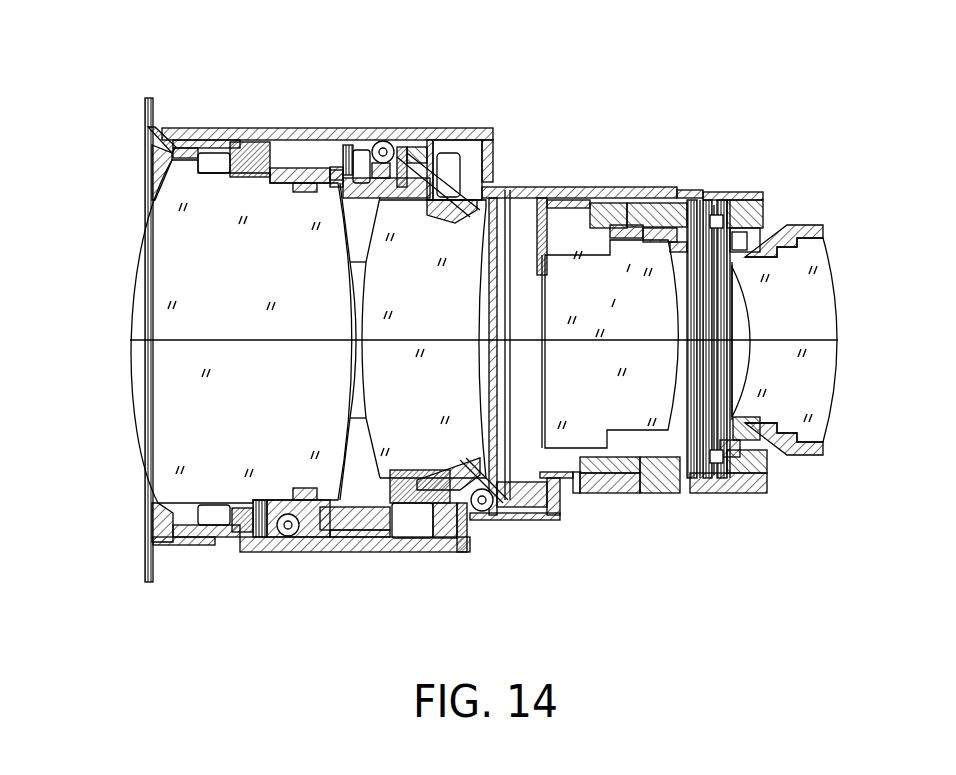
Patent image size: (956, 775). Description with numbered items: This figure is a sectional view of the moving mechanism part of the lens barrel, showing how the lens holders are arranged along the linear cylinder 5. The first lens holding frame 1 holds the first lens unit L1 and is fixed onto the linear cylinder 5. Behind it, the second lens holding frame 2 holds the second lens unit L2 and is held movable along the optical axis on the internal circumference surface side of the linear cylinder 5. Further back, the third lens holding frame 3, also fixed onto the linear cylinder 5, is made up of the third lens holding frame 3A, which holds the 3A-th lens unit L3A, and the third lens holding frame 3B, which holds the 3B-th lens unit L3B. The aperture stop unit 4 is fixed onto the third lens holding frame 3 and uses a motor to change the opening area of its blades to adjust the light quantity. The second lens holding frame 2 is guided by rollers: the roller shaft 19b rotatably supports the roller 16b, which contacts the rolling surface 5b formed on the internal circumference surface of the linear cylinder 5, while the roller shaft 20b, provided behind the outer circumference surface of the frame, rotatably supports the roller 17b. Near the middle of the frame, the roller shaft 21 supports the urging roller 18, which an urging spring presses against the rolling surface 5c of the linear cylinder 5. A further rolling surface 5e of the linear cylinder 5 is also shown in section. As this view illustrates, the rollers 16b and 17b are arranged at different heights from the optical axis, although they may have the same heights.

The first lens holding frame 1 is at (227, 128).
The second lens holding frame 2 is at (455, 128).
The third lens holding frame 3 is at (680, 192).
The third lens holding frame 3A is at (592, 187).
The third lens holding frame 3B is at (797, 200).
The aperture stop unit 4 is at (712, 195).
The linear cylinder 5 is at (505, 187).
The rolling surface 5b is at (337, 552).
The rolling surface 5c is at (397, 128).
The guide portion of fixed barrel 5e is at (525, 545).
The roller 16b is at (297, 552).
The roller 17b is at (500, 545).
The urging roller 18 is at (372, 128).
The roller shaft 19b is at (260, 552).
The roller shaft 20b is at (477, 545).
The roller shaft 21 is at (358, 128).
The first lens unit L1 is at (182, 267).
The second lens unit L2 is at (398, 377).
The 3A-th lens unit L3A is at (610, 384).
The 3B-th lens unit L3B is at (793, 294).